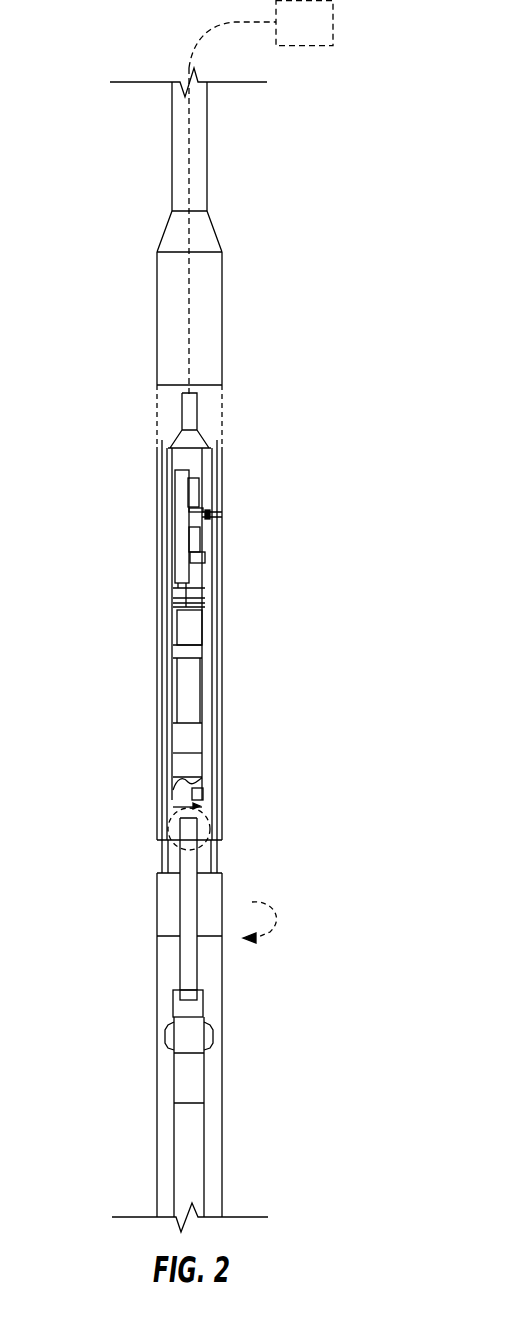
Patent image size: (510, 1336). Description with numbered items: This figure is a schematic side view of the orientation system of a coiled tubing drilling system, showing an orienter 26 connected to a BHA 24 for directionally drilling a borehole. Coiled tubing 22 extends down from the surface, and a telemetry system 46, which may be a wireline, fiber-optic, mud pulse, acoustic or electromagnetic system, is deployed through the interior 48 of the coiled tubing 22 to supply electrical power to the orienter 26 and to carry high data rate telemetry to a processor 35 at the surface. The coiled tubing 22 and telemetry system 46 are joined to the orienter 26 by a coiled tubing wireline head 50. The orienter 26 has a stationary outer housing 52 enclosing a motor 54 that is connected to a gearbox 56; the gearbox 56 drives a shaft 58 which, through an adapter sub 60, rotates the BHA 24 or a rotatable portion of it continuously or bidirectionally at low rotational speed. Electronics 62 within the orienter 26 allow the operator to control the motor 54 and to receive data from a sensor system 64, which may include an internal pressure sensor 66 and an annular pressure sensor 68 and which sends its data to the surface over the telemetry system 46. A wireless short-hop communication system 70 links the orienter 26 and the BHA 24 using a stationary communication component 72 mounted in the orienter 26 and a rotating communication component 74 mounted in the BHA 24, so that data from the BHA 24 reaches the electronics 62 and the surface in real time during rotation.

The coiled tubing 22 is at (207, 125).
The BHA 24 is at (157, 1016).
The orienter 26 is at (228, 430).
The processor 35 is at (318, 33).
The telemetry system 46 is at (189, 170).
The interior of coiled tubing 48 is at (186, 195).
The coiled tubing wireline head 50 is at (157, 277).
The outer housing 52 is at (222, 465).
The motor 54 is at (190, 698).
The gearbox 56 is at (190, 748).
The shaft 58 is at (183, 767).
The adapter sub 60 is at (215, 858).
The electronics 62 is at (182, 540).
The sensor system 64 is at (223, 500).
The internal pressure sensor 66 is at (193, 525).
The annular pressure sensor 68 is at (194, 470).
The communication system 70 is at (158, 843).
The stationary communication component 72 is at (198, 785).
The rotating communication component 74 is at (178, 965).